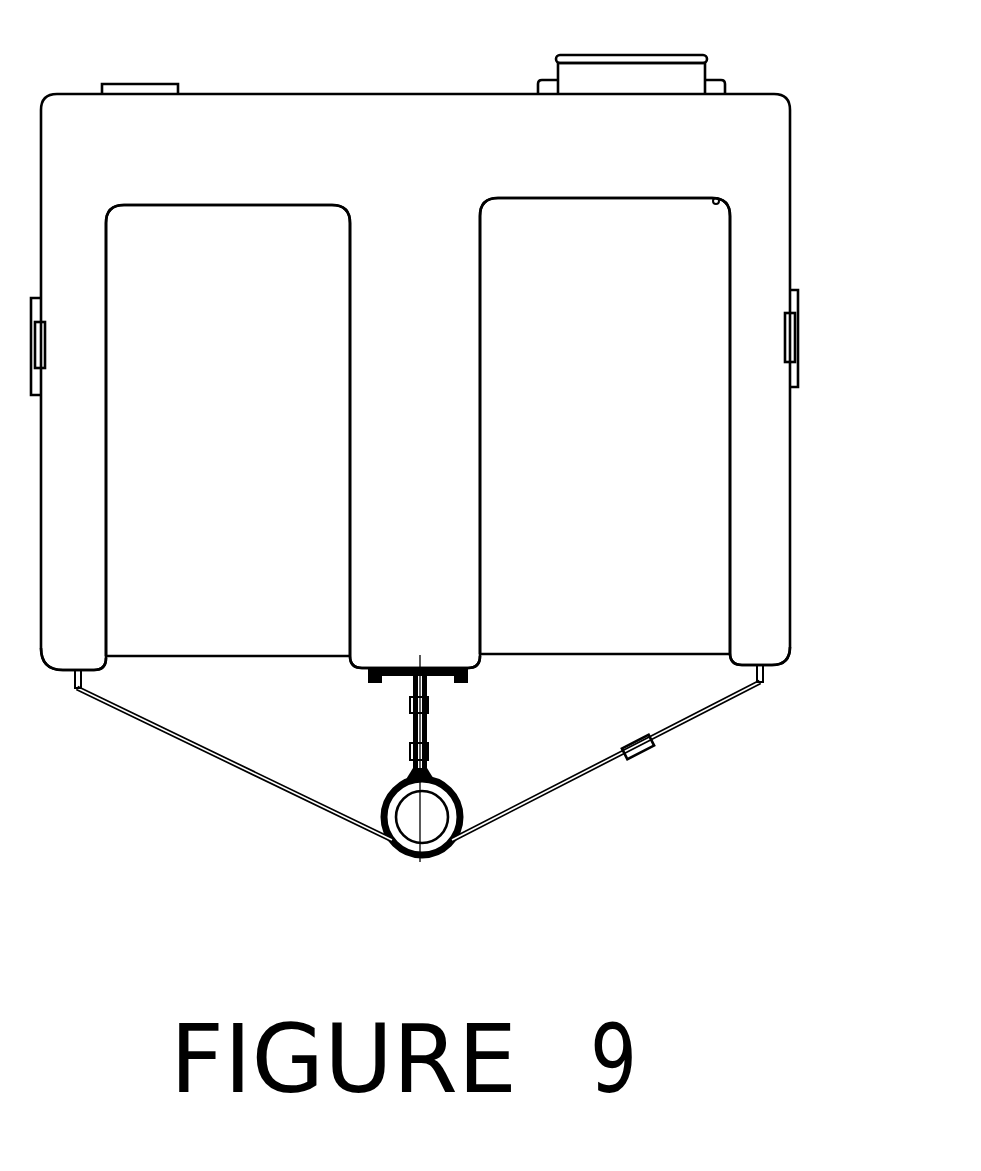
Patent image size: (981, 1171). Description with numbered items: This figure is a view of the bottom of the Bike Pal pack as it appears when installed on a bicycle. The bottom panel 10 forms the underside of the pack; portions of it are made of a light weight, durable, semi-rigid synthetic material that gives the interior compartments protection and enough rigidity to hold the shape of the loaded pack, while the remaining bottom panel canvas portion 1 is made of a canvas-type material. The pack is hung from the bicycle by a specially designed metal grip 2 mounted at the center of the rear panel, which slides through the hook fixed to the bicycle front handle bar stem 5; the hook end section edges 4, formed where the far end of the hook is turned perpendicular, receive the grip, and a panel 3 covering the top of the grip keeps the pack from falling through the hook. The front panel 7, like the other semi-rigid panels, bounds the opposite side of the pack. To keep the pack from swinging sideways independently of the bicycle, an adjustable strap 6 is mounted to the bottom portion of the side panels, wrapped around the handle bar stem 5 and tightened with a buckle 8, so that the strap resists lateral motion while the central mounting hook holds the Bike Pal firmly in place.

The bottom panel canvas portion 1 is at (600, 462).
The metal grip 2 is at (770, 530).
The panel 3 is at (528, 707).
The hook end section edges 4 is at (408, 753).
The bicycle front handle bar stem 5 is at (395, 847).
The adjustable strap 6 is at (575, 778).
The front panel 7 is at (762, 683).
The buckle 8 is at (640, 753).
The bottom panel 10 is at (273, 435).